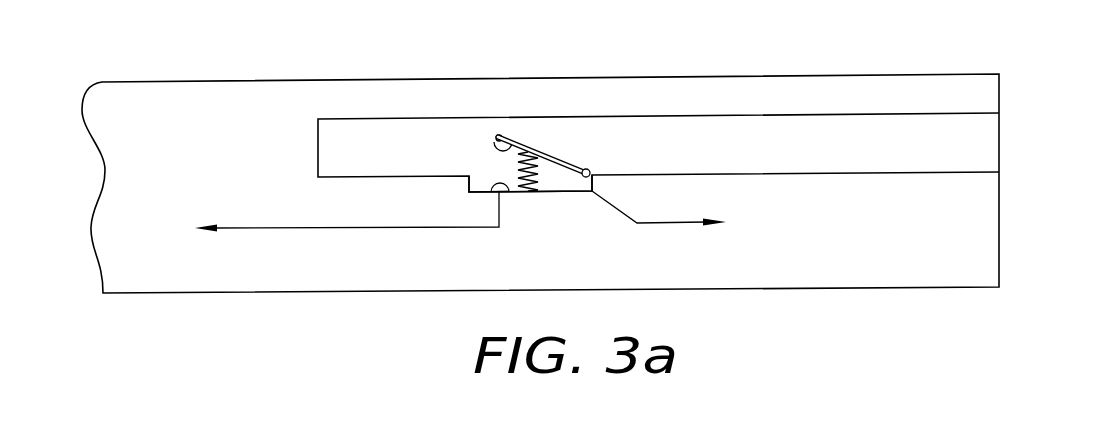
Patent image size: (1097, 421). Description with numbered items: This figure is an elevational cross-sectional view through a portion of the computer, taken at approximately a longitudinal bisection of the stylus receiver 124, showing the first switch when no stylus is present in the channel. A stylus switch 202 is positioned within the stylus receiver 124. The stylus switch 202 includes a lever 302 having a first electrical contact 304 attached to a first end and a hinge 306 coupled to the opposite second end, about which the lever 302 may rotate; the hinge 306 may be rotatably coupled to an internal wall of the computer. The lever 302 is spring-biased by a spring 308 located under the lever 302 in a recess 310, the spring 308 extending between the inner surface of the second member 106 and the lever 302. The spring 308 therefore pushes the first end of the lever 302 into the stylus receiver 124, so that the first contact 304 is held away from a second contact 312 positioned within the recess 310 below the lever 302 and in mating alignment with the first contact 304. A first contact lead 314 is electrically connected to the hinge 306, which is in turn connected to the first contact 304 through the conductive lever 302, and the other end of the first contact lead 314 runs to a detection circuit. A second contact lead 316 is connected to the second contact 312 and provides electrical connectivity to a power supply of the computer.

The second member 106 is at (905, 74).
The stylus receiver 124 is at (958, 147).
The stylus switch 202 is at (549, 153).
The lever 302 is at (558, 157).
The first electrical contact 304 is at (504, 135).
The hinge 306 is at (590, 172).
The spring 308 is at (527, 193).
The recess 310 is at (470, 161).
The second contact 312 is at (505, 195).
The first contact lead 314 is at (660, 223).
The second contact lead 316 is at (362, 230).